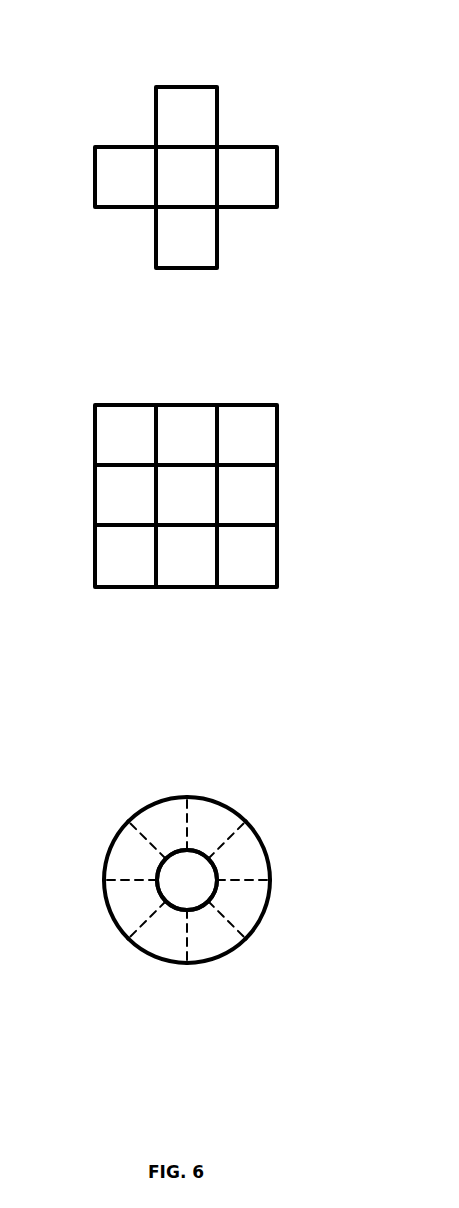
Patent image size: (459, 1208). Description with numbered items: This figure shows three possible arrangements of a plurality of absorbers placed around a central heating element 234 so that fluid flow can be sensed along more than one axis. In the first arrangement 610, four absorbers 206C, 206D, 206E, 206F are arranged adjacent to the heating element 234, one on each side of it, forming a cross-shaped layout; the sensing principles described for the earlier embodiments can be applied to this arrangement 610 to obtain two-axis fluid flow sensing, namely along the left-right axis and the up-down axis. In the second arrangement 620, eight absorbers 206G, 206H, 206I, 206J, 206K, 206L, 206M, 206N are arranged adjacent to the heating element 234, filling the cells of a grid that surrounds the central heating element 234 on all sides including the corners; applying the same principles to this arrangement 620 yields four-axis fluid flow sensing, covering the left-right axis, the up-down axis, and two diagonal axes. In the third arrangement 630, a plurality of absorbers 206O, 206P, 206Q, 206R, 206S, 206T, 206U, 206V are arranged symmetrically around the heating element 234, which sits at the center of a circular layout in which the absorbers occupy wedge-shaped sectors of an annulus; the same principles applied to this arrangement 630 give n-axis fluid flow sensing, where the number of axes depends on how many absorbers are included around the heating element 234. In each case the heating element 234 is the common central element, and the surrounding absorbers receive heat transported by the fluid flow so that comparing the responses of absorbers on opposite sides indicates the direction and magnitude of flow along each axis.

The heating element 234 is at (182, 170).
The arrangement 610 is at (392, 55).
The arrangement 620 is at (392, 371).
The arrangement 630 is at (394, 756).
The absorber 206C is at (95, 173).
The absorber 206D is at (217, 122).
The absorber 206E is at (277, 173).
The absorber 206F is at (156, 237).
The absorber 206G is at (93, 437).
The absorber 206H is at (200, 403).
The absorber 206I is at (277, 427).
The absorber 206J is at (277, 493).
The absorber 206K is at (277, 560).
The absorber 206L is at (193, 587).
The absorber 206M is at (93, 563).
The absorber 206N is at (93, 500).
The absorber 206O is at (227, 803).
The absorber 206P is at (267, 847).
The absorber 206Q is at (270, 902).
The absorber 206R is at (227, 953).
The absorber 206S is at (143, 955).
The absorber 206T is at (107, 898).
The absorber 206U is at (108, 853).
The absorber 206V is at (143, 807).